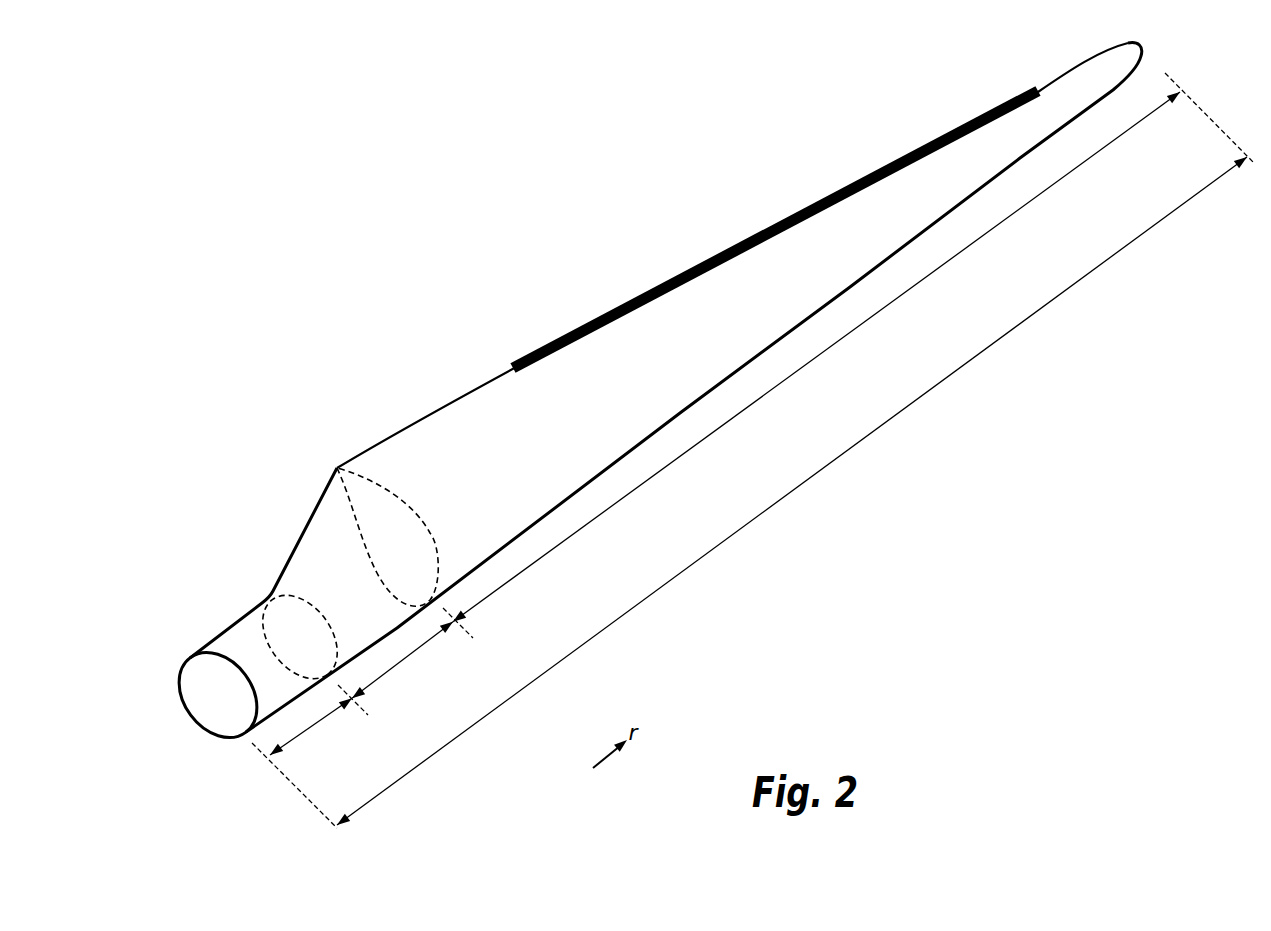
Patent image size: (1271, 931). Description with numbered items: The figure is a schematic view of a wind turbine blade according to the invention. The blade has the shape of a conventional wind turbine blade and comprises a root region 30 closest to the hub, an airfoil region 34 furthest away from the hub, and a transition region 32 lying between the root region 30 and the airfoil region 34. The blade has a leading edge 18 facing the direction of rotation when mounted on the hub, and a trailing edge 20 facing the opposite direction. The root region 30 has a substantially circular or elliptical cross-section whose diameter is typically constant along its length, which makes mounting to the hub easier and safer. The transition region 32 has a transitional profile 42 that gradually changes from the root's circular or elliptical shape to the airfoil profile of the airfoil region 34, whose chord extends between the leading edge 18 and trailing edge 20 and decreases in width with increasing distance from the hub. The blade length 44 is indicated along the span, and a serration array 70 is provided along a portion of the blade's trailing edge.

The leading edge 18 is at (850, 287).
The trailing edge 20 is at (450, 405).
The root region 30 is at (312, 727).
The transition region 32 is at (407, 658).
The airfoil region 34 is at (750, 410).
The transitional profile 42 is at (602, 700).
The blade length 44 is at (780, 498).
The serration array 70 is at (662, 280).